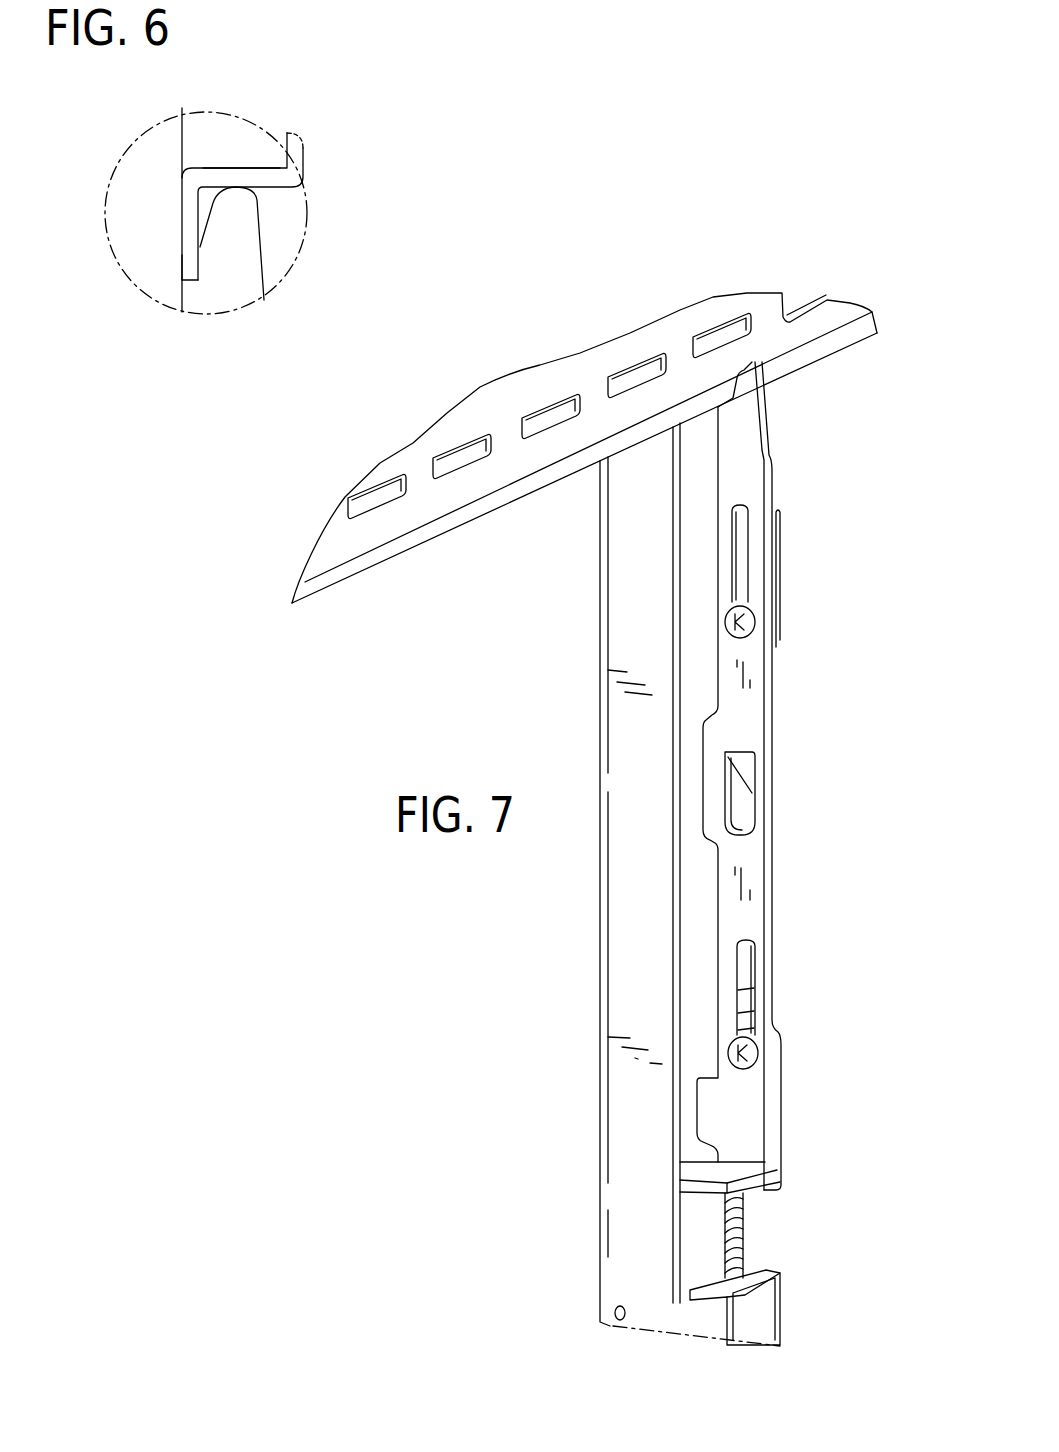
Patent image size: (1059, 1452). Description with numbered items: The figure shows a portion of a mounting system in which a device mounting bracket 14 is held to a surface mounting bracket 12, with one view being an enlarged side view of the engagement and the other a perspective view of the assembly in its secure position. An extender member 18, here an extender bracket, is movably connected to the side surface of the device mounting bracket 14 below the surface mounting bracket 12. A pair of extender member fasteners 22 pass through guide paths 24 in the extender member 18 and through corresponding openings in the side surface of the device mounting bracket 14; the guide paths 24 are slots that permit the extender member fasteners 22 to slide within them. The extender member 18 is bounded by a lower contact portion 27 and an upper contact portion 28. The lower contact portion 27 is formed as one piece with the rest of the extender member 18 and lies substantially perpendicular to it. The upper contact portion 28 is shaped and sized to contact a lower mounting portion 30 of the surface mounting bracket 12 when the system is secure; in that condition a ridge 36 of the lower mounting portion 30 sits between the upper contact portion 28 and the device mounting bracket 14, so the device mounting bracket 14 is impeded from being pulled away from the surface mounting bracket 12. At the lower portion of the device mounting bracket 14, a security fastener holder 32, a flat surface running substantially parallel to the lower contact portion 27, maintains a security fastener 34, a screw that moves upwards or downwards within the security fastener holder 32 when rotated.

In FIG. 6, the surface mounting bracket 12 is at (300, 178).
In FIG. 7, the surface mounting bracket 12 is at (575, 372).
In FIG. 6, the device mounting bracket 14 is at (140, 157).
In FIG. 7, the device mounting bracket 14 is at (642, 598).
In FIG. 7, the extender member 18 is at (740, 707).
In FIG. 7, the extender member fasteners 22 is at (745, 617).
In FIG. 7, the guide paths 24 is at (745, 515).
In FIG. 7, the lower contact portion 27 is at (725, 1170).
In FIG. 6, the upper contact portion 28 is at (237, 227).
In FIG. 6, the lower mounting portion 30 is at (257, 173).
In FIG. 7, the security fastener holder 32 is at (748, 1270).
In FIG. 7, the security fastener 34 is at (743, 1215).
In FIG. 6, the ridge 36 is at (188, 260).